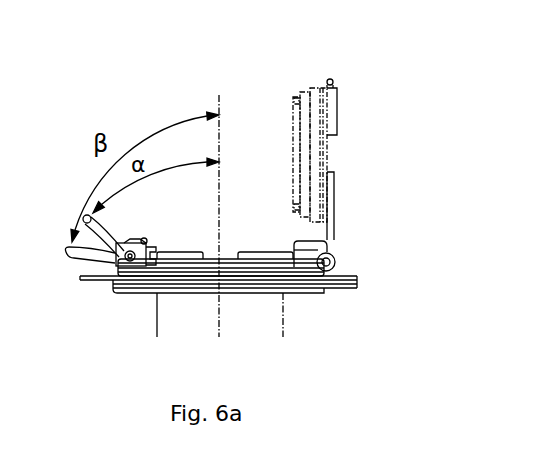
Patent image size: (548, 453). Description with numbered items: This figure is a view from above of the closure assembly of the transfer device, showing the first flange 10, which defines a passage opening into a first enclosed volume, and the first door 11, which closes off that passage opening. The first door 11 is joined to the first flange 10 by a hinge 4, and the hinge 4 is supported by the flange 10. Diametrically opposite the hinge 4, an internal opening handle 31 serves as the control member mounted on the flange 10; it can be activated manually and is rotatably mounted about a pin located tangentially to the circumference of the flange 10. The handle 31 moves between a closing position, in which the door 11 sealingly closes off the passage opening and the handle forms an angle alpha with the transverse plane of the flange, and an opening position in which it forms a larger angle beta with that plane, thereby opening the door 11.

The hinge 4 is at (352, 256).
The first flange 10 is at (332, 291).
The first door 11 is at (301, 79).
The internal opening handle 31 is at (68, 278).